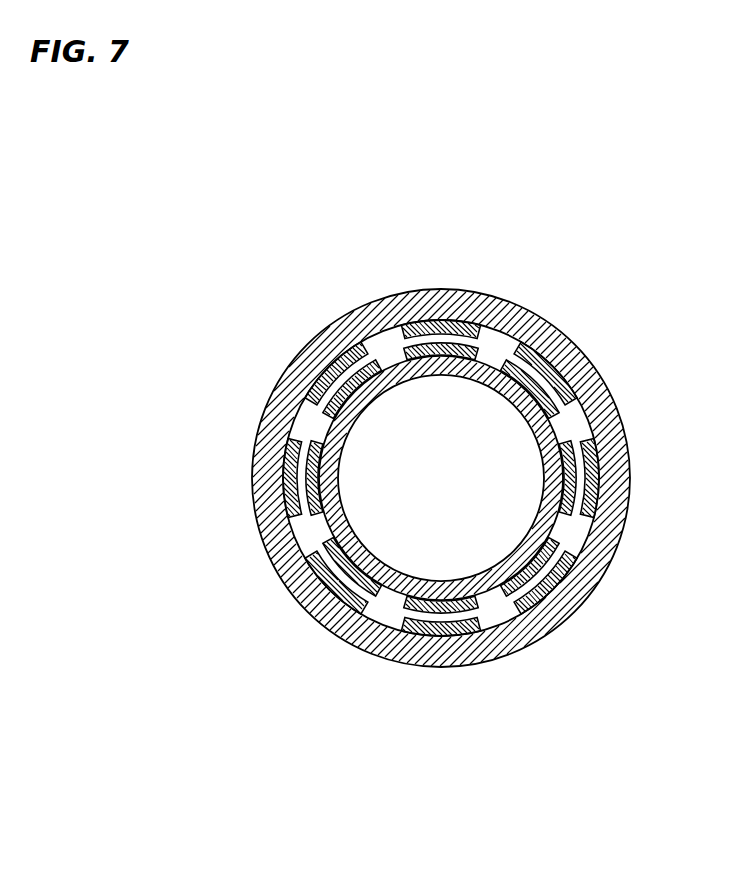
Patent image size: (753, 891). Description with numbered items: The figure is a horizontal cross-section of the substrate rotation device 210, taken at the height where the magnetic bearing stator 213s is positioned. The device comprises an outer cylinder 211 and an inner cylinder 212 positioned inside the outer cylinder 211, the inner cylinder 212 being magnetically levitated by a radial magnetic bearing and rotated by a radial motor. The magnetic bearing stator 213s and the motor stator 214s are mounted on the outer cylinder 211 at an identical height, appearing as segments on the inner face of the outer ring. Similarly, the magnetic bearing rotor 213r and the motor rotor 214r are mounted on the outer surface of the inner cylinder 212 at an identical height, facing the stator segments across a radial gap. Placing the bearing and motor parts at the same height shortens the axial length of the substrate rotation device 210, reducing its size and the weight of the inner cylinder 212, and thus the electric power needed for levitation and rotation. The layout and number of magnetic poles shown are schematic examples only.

The substrate rotation device 210 is at (660, 740).
The outer cylinder 211 is at (503, 311).
The inner cylinder 212 is at (343, 527).
The magnetic bearing stator 213s is at (411, 323).
The motor stator 214s is at (323, 368).
The magnetic bearing rotor 213r is at (444, 348).
The motor rotor 214r is at (357, 382).